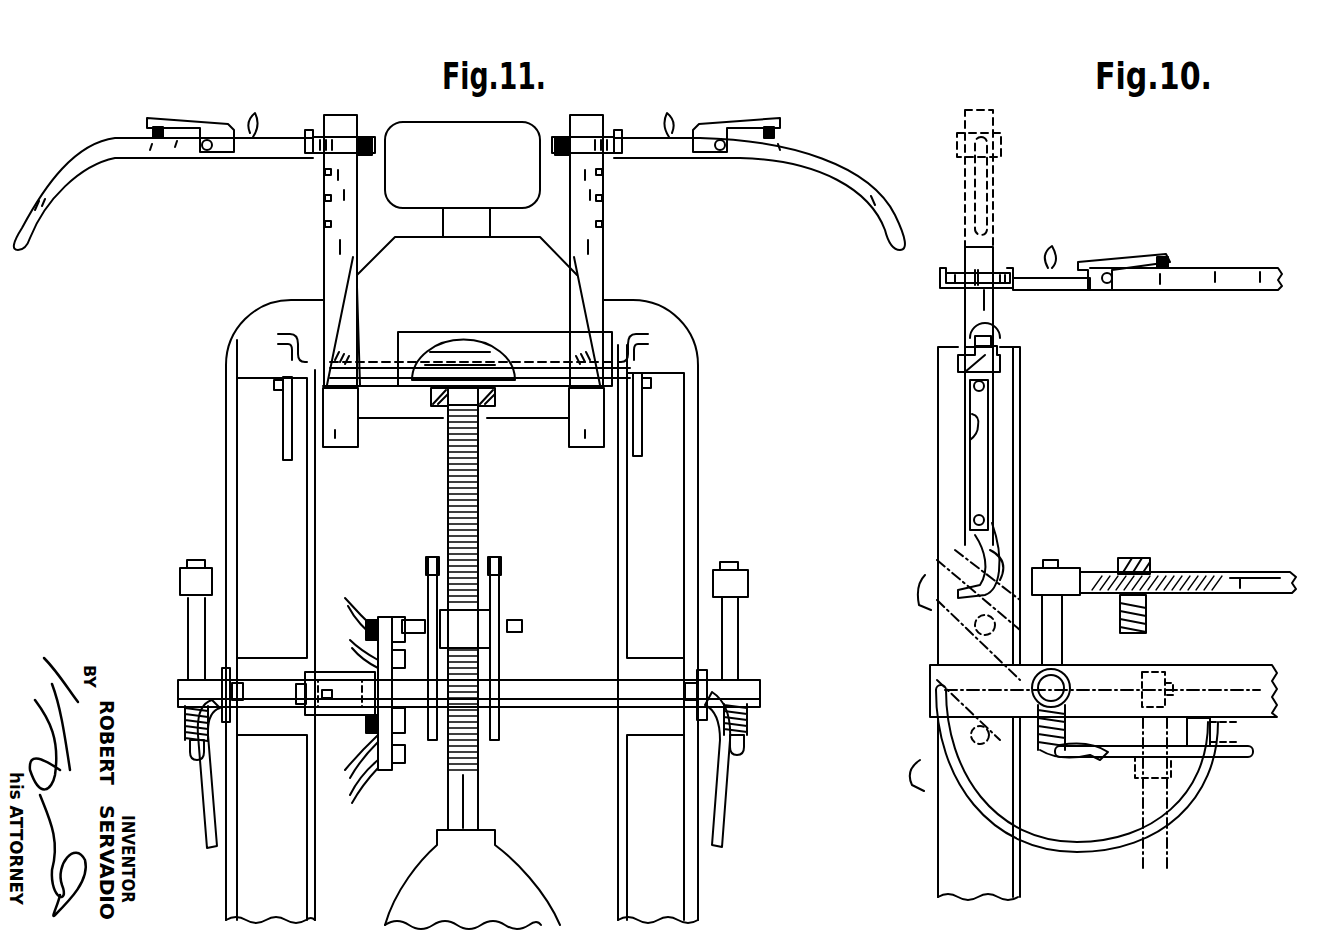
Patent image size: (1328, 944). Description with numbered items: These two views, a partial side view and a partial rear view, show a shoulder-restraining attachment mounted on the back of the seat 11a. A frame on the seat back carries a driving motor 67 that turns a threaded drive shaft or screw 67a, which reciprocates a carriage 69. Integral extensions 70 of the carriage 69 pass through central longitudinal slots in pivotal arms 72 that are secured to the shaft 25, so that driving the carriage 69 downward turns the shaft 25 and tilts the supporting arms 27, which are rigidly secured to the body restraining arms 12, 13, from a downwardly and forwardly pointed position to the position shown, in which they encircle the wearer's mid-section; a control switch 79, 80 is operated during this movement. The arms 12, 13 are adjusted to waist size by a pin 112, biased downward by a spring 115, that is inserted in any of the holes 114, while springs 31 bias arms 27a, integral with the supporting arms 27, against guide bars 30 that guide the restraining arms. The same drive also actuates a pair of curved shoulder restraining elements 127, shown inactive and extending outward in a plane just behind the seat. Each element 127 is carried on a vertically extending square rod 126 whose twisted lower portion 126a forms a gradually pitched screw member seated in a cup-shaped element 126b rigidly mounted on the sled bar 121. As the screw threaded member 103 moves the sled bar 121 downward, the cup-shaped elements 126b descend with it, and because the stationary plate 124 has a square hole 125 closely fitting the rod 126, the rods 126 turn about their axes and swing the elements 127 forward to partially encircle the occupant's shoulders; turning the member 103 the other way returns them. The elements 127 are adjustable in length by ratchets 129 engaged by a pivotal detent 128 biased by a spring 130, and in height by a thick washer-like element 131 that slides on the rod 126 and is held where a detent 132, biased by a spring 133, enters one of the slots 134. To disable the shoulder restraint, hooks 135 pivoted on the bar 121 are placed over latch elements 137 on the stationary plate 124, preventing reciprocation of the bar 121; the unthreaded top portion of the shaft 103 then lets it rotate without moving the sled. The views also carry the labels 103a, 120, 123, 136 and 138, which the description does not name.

In FIG. 11, the seat 11a is at (700, 322).
In FIG. 11, the body restraining arm 12 is at (748, 582).
In FIG. 10, the body restraining arm 12 is at (1080, 568).
In FIG. 11, the body restraining arm 13 is at (180, 582).
In FIG. 11, the shaft 25 is at (540, 707).
In FIG. 10, the shaft 25 is at (1060, 690).
In FIG. 11, the supporting arm 27 is at (188, 632).
In FIG. 10, the supporting arm 27 is at (1062, 645).
In FIG. 11, the arm 27a is at (190, 752).
In FIG. 10, the arm 27a is at (1230, 757).
In FIG. 11, the guide bar 30 is at (203, 806).
In FIG. 10, the guide bar 30 is at (1080, 852).
In FIG. 11, the spring 31 is at (185, 720).
In FIG. 10, the spring 31 is at (1040, 750).
In FIG. 11, the driving motor 67 is at (510, 875).
In FIG. 11, the threaded drive shaft 67a is at (478, 810).
In FIG. 11, the carriage 69 is at (490, 638).
In FIG. 11, the integral extension 70 is at (424, 620).
In FIG. 10, the integral extension 70 is at (975, 625).
In FIG. 11, the pivotal arm 72 is at (428, 575).
In FIG. 10, the pivotal arm 72 is at (915, 590).
In FIG. 11, the control switch 79 is at (405, 760).
In FIG. 11, the control switch 80 is at (378, 617).
In FIG. 11, the screw threaded member 103 is at (480, 535).
In FIG. 11, the screw head 103a is at (458, 404).
In FIG. 10, the pin 112 is at (1134, 558).
In FIG. 10, the holes 114 is at (1195, 593).
In FIG. 10, the spring 115 is at (1146, 615).
In FIG. 11, the nut 120 is at (438, 406).
In FIG. 11, the sled bar 121 is at (492, 406).
In FIG. 11, the cap 123 is at (470, 350).
In FIG. 11, the stationary plate 124 is at (382, 360).
In FIG. 10, the stationary plate 124 is at (958, 364).
In FIG. 11, the square hole 125 is at (362, 355).
In FIG. 11, the vertically extending rod 126 is at (324, 250).
In FIG. 10, the vertically extending rod 126 is at (965, 312).
In FIG. 11, the twisted lower portion 126a is at (333, 300).
In FIG. 11, the cup-shaped element 126b is at (345, 447).
In FIG. 11, the shoulder restraining element 127 is at (88, 165).
In FIG. 10, the shoulder restraining element 127 is at (993, 199).
In FIG. 11, the pivotal detent 128 is at (200, 120).
In FIG. 10, the pivotal detent 128 is at (1110, 262).
In FIG. 11, the ratchet 129 is at (465, 109).
In FIG. 10, the ratchet 129 is at (1056, 239).
In FIG. 11, the spring 130 is at (150, 130).
In FIG. 10, the spring 130 is at (1170, 262).
In FIG. 11, the washer-like element 131 is at (365, 137).
In FIG. 10, the washer-like element 131 is at (968, 270).
In FIG. 11, the detent 132 is at (305, 155).
In FIG. 10, the detent 132 is at (1000, 146).
In FIG. 11, the spring 133 is at (368, 170).
In FIG. 11, the slots 134 is at (325, 224).
In FIG. 11, the hook 135 is at (283, 420).
In FIG. 10, the hook 135 is at (1000, 330).
In FIG. 11, the bolt 136 is at (274, 384).
In FIG. 11, the latch element 137 is at (285, 334).
In FIG. 10, the latch element 137 is at (991, 341).
In FIG. 10, the strap 138 is at (970, 450).